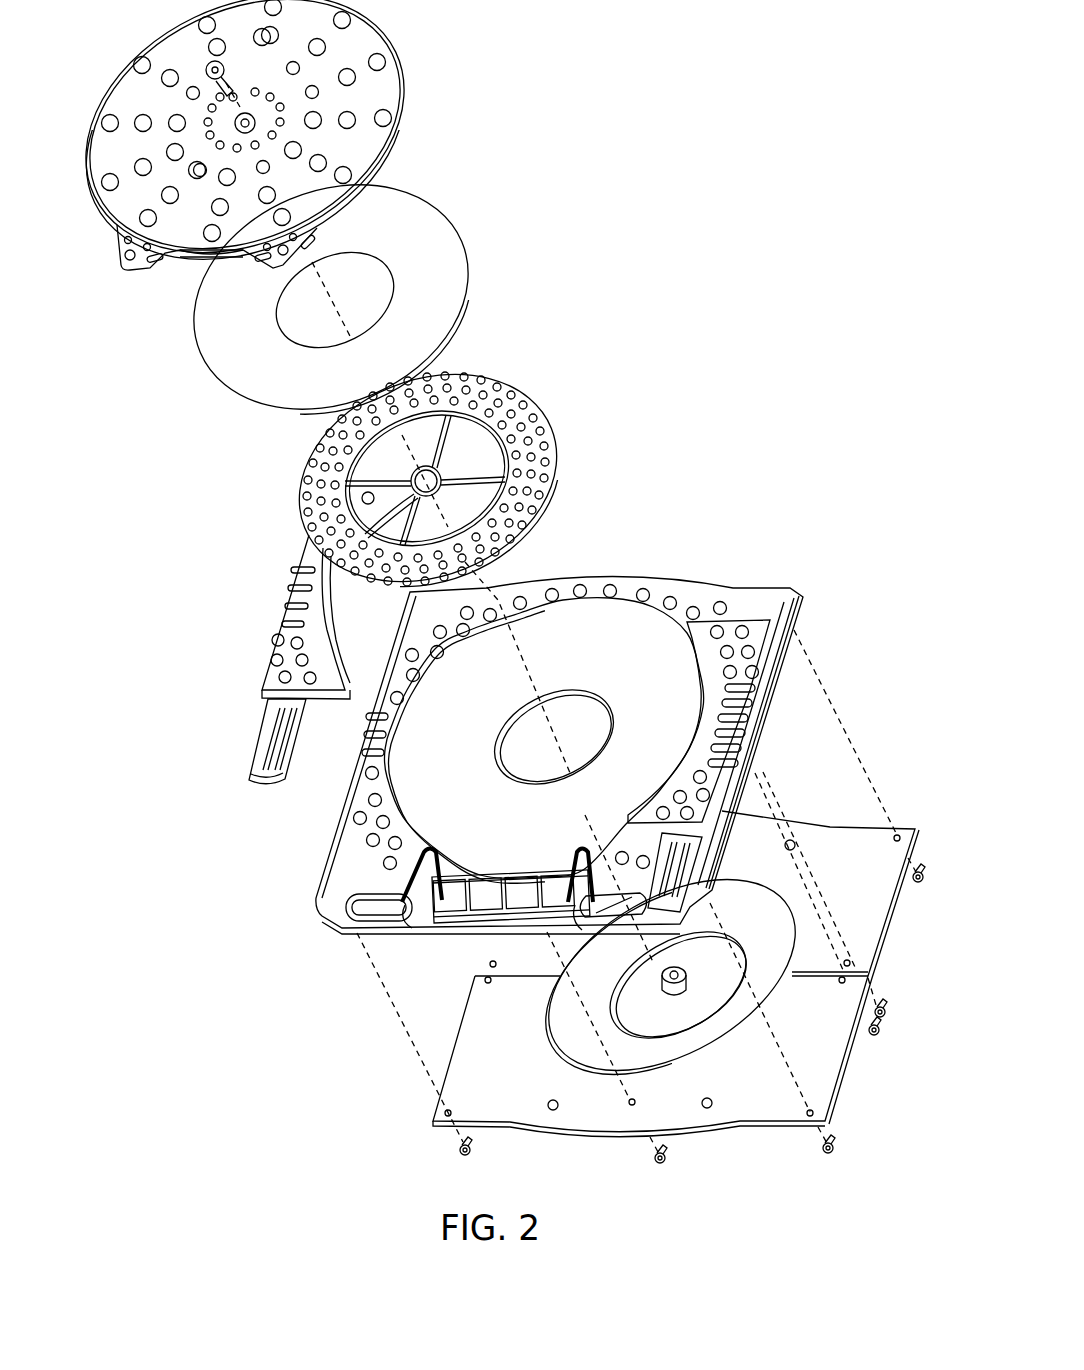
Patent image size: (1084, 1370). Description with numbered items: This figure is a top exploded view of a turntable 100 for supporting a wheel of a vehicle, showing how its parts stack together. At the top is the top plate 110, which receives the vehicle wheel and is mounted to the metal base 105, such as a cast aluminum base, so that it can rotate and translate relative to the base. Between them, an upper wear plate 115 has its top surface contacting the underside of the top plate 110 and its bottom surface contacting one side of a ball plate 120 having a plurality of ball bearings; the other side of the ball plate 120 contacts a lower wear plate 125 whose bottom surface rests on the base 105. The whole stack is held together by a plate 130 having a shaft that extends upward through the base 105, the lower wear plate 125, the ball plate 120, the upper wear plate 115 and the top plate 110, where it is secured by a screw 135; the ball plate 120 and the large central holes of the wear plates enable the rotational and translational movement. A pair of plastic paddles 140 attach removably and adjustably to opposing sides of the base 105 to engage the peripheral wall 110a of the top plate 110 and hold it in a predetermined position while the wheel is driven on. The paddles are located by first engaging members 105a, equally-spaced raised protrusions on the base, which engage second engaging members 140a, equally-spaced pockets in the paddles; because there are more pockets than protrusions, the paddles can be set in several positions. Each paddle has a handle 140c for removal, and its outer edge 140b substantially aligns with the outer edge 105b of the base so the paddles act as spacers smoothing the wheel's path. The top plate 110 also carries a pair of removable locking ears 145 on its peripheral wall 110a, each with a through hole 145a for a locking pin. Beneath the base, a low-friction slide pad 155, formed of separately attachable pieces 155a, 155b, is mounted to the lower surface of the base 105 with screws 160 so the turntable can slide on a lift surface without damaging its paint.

The turntable 100 is at (516, 172).
The base 105 is at (332, 898).
The first engaging members 105a is at (370, 760).
The outer edge 105b is at (762, 730).
The top plate 110 is at (372, 41).
The peripheral wall 110a is at (380, 163).
The upper wear plate 115 is at (457, 245).
The ball plate 120 is at (547, 433).
The lower wear plate 125 is at (595, 657).
The plate 130 is at (715, 1007).
The screw 135 is at (212, 66).
The paddles 140 is at (270, 667).
The second engaging members 140a is at (289, 588).
The outer edge 140b is at (773, 687).
The handle 140c is at (273, 742).
The locking ears 145 is at (137, 268).
The through hole 145a is at (123, 258).
The slide pad 155 is at (898, 956).
The slide pad piece 155a is at (517, 1071).
The slide pad piece 155b is at (862, 872).
The screws 160 is at (463, 1147).